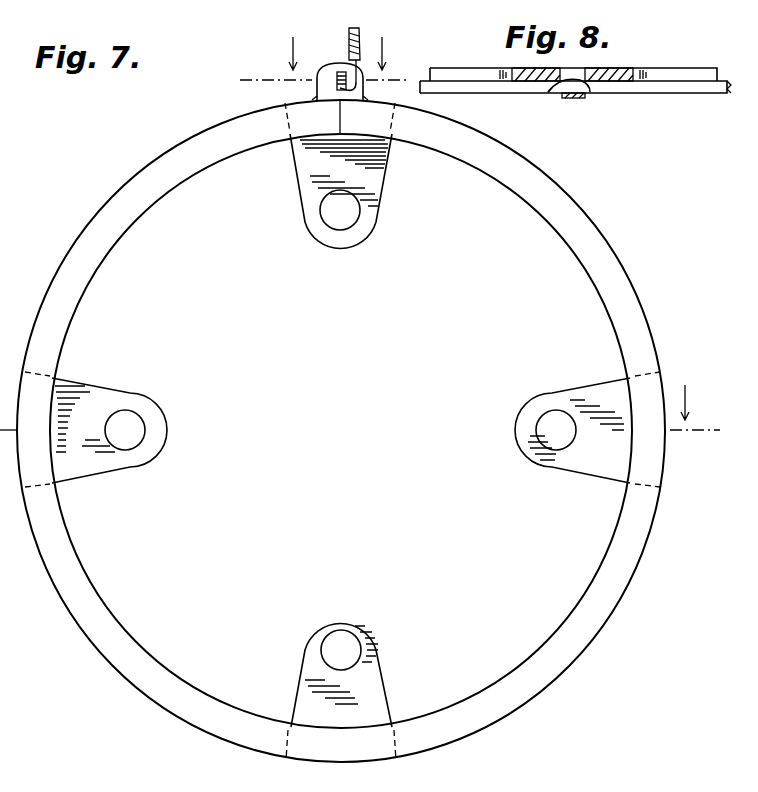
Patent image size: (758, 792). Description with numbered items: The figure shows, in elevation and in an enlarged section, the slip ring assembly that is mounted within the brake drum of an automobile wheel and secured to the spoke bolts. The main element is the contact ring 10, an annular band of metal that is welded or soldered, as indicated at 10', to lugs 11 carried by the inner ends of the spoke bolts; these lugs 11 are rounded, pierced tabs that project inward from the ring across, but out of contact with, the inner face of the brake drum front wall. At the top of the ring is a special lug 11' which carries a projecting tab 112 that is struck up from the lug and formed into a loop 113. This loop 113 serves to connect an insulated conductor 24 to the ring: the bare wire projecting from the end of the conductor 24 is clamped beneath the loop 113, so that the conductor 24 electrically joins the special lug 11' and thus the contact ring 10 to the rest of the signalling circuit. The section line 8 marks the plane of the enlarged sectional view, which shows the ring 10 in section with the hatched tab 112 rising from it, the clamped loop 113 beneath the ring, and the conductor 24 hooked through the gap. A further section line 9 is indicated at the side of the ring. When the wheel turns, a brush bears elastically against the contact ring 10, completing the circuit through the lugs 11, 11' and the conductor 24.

In FIG. 7, the contact ring 10 is at (341, 431).
In FIG. 8, the contact ring 10 is at (575, 80).
In FIG. 7, the weld or solder 10' is at (340, 98).
In FIG. 7, the lugs 11 is at (341, 552).
In FIG. 7, the special lug 11' is at (354, 191).
In FIG. 7, the projecting tab 112 is at (340, 62).
In FIG. 8, the projecting tab 112 is at (618, 68).
In FIG. 7, the loop 113 is at (334, 80).
In FIG. 8, the loop 113 is at (572, 98).
In FIG. 7, the conductor 24 is at (357, 34).
In FIG. 8, the conductor 24 is at (552, 94).
In FIG. 7, the section line 8— 8 is at (325, 59).
In FIG. 7, the section line 9 is at (360, 408).